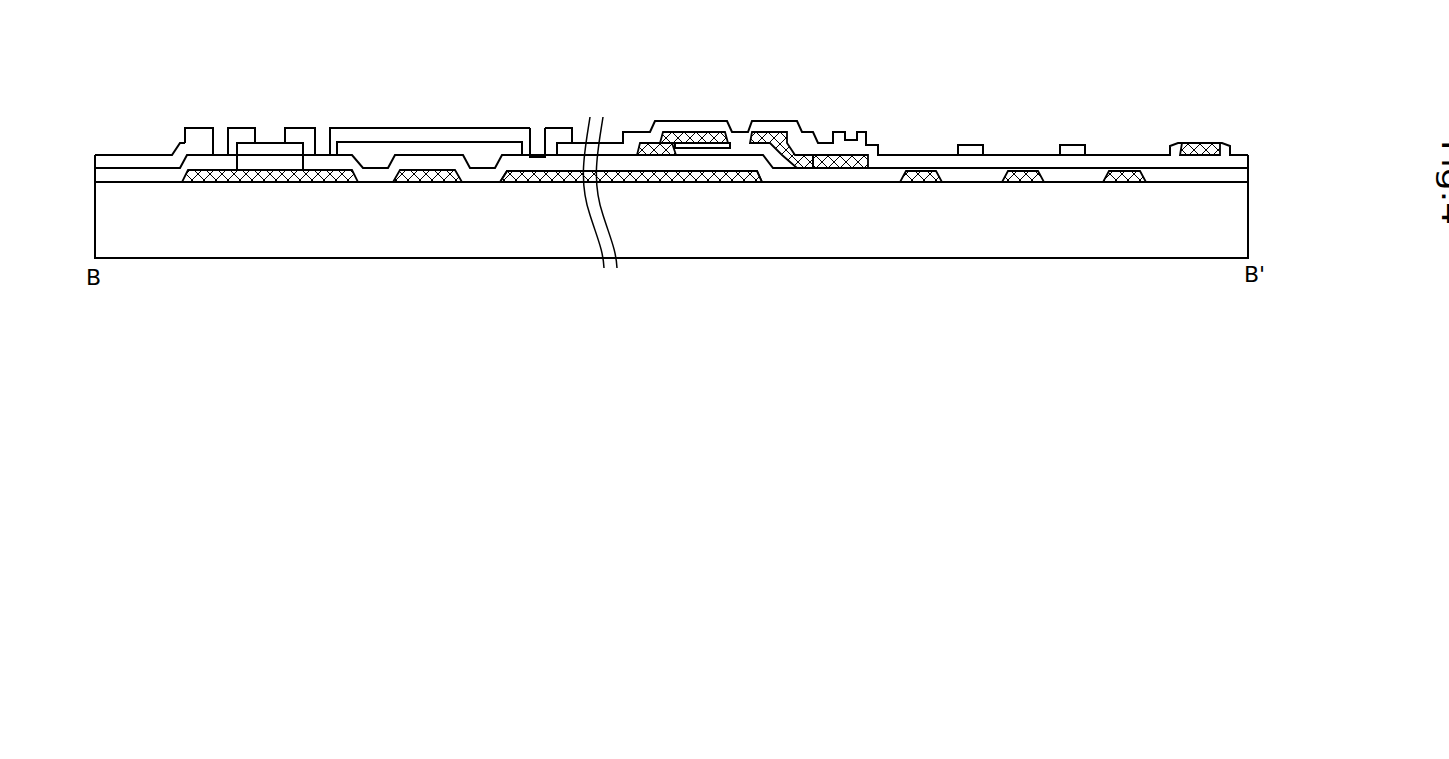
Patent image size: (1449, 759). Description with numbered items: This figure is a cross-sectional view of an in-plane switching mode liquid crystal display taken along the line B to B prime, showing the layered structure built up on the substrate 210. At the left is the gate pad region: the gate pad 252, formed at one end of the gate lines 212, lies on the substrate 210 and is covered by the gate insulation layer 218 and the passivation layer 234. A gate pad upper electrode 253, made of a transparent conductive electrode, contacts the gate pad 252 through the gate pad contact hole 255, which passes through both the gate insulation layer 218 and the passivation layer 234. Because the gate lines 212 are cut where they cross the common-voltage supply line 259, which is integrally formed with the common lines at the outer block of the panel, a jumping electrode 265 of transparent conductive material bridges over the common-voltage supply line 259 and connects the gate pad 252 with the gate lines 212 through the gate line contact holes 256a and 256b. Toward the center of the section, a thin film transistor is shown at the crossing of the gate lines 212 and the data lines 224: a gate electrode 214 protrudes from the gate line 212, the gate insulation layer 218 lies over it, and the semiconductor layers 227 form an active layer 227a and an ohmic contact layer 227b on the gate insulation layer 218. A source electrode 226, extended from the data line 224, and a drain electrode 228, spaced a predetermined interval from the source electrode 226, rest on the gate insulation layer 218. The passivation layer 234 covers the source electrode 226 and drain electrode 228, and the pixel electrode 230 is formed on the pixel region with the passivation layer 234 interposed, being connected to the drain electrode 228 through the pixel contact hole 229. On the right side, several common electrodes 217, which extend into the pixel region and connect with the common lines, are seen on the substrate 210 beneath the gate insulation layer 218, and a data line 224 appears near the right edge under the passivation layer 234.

The substrate 210 is at (1238, 218).
The gate line 212 is at (528, 183).
The gate electrode 214 is at (742, 183).
The common electrode 217 is at (925, 183).
The gate insulation layer 218 is at (1238, 176).
The data line 224 is at (1198, 153).
The source electrode 226 is at (703, 130).
The semiconductor layer 227 is at (679, 66).
The active layer 227a is at (655, 142).
The ohmic contact layer 227b is at (687, 152).
The drain electrode 228 is at (763, 130).
The pixel contact hole 229 is at (853, 143).
The pixel electrode 230 is at (1070, 143).
The passivation layer 234 is at (1238, 163).
The gate pad 252 is at (240, 183).
The gate pad upper electrode 253 is at (245, 132).
The gate pad contact hole 255 is at (217, 124).
The gate line contact hole 256a is at (320, 124).
The gate line contact hole 256b is at (536, 125).
The common-voltage supply line 259 is at (430, 183).
The jumping electrode 265 is at (417, 134).